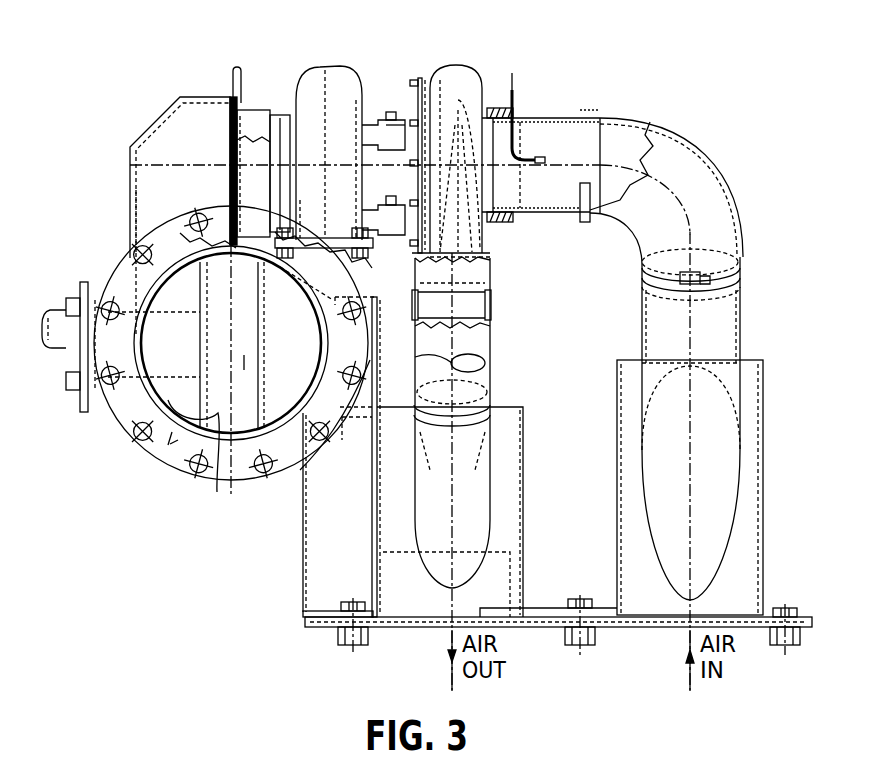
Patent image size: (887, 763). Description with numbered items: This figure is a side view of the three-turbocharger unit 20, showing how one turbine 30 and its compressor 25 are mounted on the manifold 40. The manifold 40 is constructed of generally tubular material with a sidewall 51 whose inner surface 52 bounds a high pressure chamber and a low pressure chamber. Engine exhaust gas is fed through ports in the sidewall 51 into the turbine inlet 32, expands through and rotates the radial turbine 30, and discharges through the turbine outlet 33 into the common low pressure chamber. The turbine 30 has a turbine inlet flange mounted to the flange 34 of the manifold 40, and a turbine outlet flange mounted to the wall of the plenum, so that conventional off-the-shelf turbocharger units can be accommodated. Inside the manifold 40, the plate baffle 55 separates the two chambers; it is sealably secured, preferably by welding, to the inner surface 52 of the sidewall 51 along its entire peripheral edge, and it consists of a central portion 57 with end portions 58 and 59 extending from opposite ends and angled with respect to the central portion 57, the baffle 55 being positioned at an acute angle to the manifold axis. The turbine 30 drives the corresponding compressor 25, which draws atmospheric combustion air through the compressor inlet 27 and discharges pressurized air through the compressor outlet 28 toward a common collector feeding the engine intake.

The turbocharger test apparatus 20 is at (505, 51).
The compressor 25 is at (453, 65).
The compressor inlet 27 is at (500, 222).
The compressor outlet 28 is at (440, 232).
The turbine 30 is at (317, 68).
The turbine inlet 32 is at (358, 236).
The turbine outlet 33 is at (292, 108).
The flange 34 is at (356, 270).
The manifold 40 is at (103, 240).
The sidewall 51 is at (148, 395).
The inner surface 52 is at (152, 450).
The baffle 55 is at (228, 468).
The central portion 57 is at (250, 362).
The end portion 58 is at (188, 337).
The end portion 59 is at (297, 337).